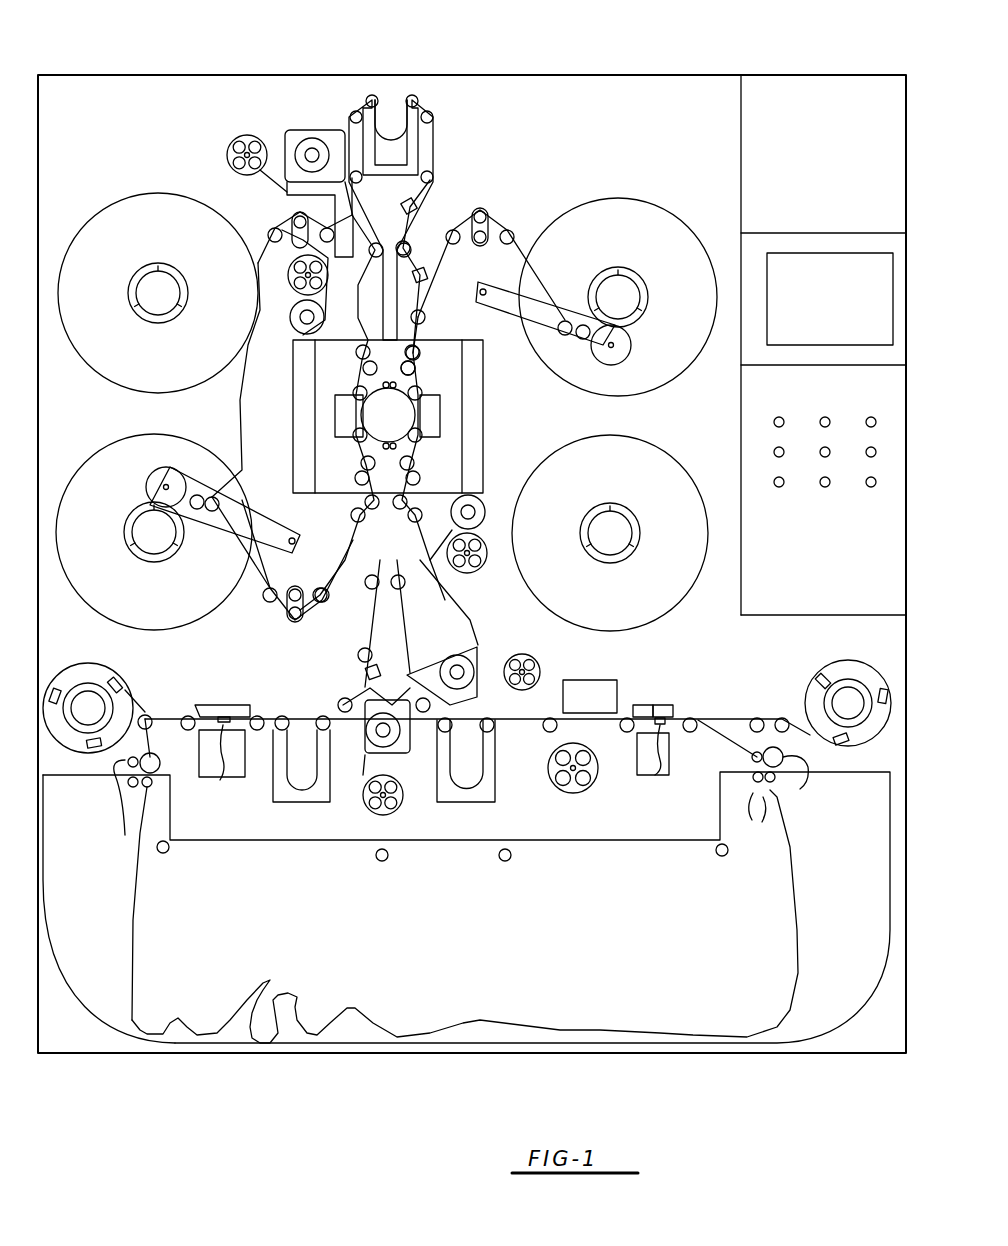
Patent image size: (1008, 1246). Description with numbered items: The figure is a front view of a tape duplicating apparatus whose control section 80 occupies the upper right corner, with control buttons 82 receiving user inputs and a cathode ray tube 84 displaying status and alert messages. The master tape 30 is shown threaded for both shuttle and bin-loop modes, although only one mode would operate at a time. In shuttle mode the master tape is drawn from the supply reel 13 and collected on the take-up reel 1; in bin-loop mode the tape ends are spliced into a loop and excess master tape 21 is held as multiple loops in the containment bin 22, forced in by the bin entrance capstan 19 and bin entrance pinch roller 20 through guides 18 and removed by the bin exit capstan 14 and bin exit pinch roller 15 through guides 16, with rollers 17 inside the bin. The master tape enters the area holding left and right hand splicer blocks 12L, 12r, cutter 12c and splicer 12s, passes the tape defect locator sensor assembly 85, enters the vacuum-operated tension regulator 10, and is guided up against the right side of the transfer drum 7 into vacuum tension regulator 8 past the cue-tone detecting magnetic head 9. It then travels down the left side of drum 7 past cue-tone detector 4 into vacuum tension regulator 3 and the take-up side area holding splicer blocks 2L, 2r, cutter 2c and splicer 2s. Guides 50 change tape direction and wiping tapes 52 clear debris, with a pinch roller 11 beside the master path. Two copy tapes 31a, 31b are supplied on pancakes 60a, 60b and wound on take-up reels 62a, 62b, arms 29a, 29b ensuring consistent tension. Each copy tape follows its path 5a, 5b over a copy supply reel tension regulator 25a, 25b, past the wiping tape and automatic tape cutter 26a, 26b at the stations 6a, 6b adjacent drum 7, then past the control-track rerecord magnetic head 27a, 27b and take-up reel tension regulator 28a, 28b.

The control section 80 is at (850, 68).
The cathode ray tube 84 is at (800, 303).
The control buttons 82 is at (765, 423).
The pancake 60a is at (135, 194).
The take-up reel 62b is at (655, 198).
The take-up reel 62a is at (110, 625).
The pancake 60b is at (693, 605).
The arm 29a is at (256, 578).
The arm 29b is at (504, 291).
The vacuum tension regulator 8 is at (443, 152).
The cue-tone detecting magnetic head 9 is at (400, 207).
The wiping tape and automatic tape cutter 6a is at (335, 393).
The wiping tape and automatic tape cutter 6b is at (452, 420).
The transfer drum 7 is at (398, 429).
The wiping tape and automatic tape cutter 26a is at (360, 345).
The wiping tape and automatic tape cutter 26b is at (440, 518).
The copy tape path 5a is at (330, 505).
The copy tape path 5b is at (443, 340).
The control-track rerecord magnetic head 27a is at (350, 605).
The control-track rerecord magnetic head 27b is at (428, 265).
The copy supply reel tension regulator 25a is at (295, 223).
The copy supply reel tension regulator 25b is at (476, 598).
The copy tape 31a is at (266, 263).
The copy tape 31b is at (480, 217).
The copy tape take-up reel tension regulator 28a is at (290, 622).
The copy tape take-up reel tension regulator 28b is at (480, 207).
The master tape 30 is at (734, 705).
The take-up reel 1 is at (67, 675).
The left hand splicer block 2L is at (208, 700).
The right hand splicer block 2r is at (223, 700).
The cutter 2c is at (193, 715).
The splicer 2s is at (222, 771).
The vacuum tension regulator 3 is at (304, 733).
The cue-tone detector 4 is at (350, 678).
The vacuum-operated tension regulator 10 is at (472, 735).
The wiping tape 52 is at (410, 677).
The guide 50 is at (540, 725).
The pinch roller 11 is at (560, 800).
The sensor assembly 85 is at (560, 695).
The left hand splicer block 12L is at (640, 700).
The right hand splicer block 12r is at (675, 700).
The cutter 12c is at (658, 740).
The splicer 12s is at (648, 769).
The supply reel 13 is at (847, 660).
The bin exit capstan 14 is at (733, 765).
The bin exit pinch roller 15 is at (792, 773).
The guides 16 is at (763, 805).
The bin entrance pinch roller 20 is at (163, 770).
The bin entrance capstan 19 is at (114, 783).
The guides 18 is at (138, 785).
The excess master tape 21 is at (130, 895).
The containment bin 22 is at (452, 950).
The bin rollers 17 is at (170, 855).